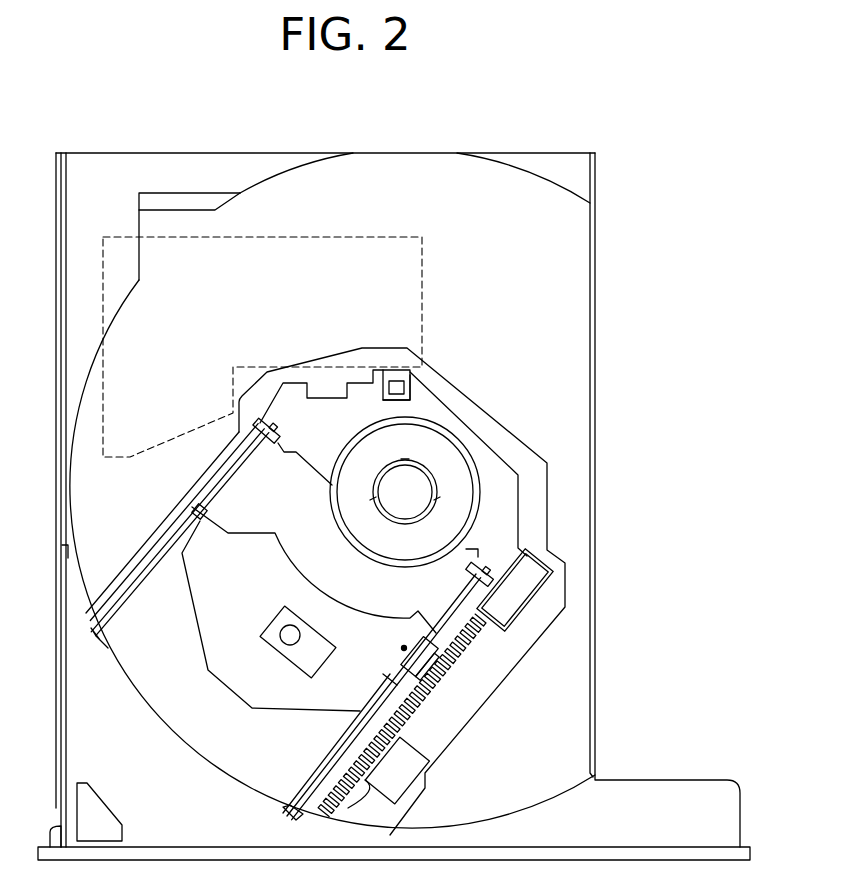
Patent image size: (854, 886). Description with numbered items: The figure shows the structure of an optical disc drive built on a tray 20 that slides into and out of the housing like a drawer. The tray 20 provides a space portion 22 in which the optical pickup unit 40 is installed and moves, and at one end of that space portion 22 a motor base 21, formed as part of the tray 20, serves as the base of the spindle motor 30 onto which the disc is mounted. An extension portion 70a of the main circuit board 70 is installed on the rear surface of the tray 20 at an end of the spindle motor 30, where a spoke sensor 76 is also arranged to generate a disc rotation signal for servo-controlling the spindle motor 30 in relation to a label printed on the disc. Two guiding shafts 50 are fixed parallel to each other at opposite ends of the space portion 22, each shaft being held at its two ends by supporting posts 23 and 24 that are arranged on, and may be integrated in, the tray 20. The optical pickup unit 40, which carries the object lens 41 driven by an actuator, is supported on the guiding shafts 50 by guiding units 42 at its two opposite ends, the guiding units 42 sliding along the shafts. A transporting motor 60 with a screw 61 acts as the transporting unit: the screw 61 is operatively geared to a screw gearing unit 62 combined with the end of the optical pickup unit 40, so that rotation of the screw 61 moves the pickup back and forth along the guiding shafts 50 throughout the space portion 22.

The tray 20 is at (705, 790).
The motor base 21 is at (312, 441).
The space portion 22 is at (192, 728).
The supporting post 23 is at (110, 651).
The supporting post 24 is at (270, 447).
The spindle motor 30 is at (427, 484).
The optical pickup unit 40 is at (264, 563).
The object lens 41 is at (297, 632).
The guiding unit 42 is at (203, 512).
The guiding shaft 50 is at (152, 578).
The transporting motor 60 is at (547, 578).
The screw 61 is at (415, 790).
The screw gearing unit 62 is at (436, 668).
The printed circuit board 70 is at (351, 237).
The extension portion of main circuit board 70a is at (410, 398).
The spoke sensor 76 is at (398, 388).